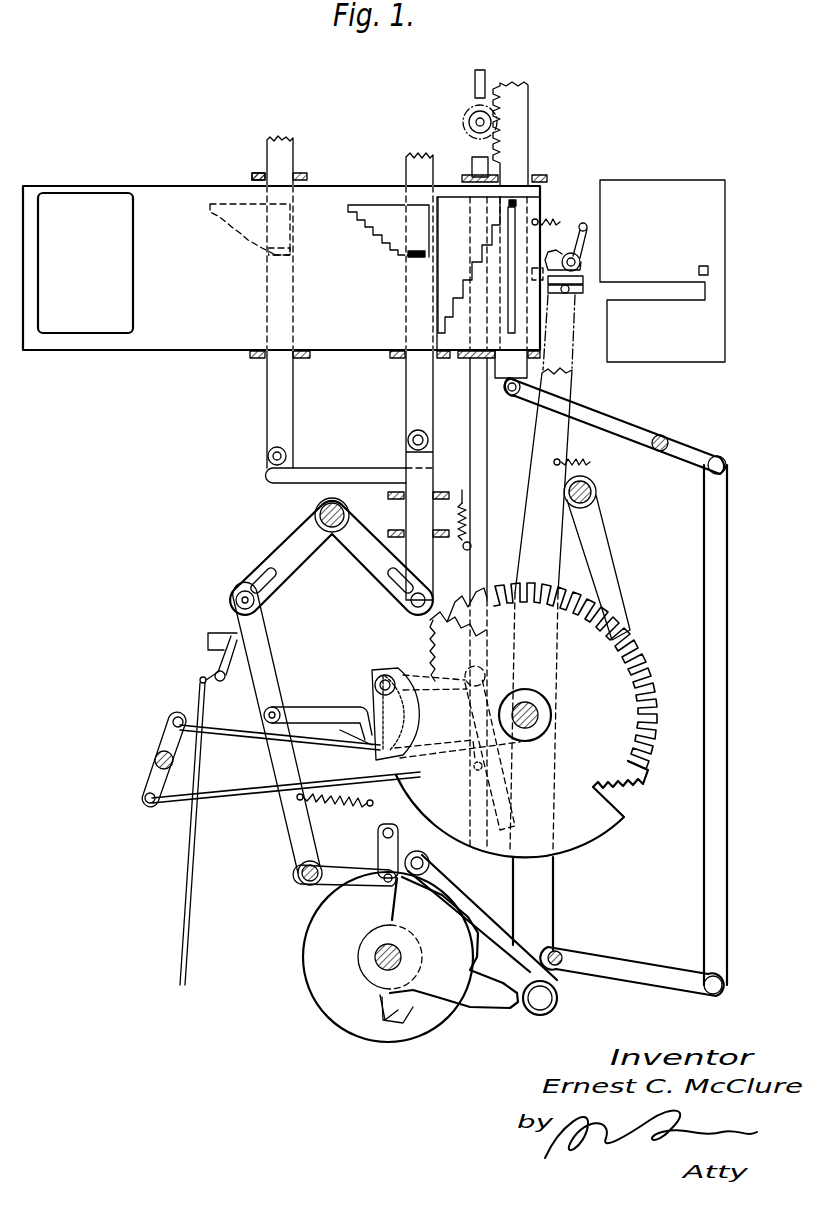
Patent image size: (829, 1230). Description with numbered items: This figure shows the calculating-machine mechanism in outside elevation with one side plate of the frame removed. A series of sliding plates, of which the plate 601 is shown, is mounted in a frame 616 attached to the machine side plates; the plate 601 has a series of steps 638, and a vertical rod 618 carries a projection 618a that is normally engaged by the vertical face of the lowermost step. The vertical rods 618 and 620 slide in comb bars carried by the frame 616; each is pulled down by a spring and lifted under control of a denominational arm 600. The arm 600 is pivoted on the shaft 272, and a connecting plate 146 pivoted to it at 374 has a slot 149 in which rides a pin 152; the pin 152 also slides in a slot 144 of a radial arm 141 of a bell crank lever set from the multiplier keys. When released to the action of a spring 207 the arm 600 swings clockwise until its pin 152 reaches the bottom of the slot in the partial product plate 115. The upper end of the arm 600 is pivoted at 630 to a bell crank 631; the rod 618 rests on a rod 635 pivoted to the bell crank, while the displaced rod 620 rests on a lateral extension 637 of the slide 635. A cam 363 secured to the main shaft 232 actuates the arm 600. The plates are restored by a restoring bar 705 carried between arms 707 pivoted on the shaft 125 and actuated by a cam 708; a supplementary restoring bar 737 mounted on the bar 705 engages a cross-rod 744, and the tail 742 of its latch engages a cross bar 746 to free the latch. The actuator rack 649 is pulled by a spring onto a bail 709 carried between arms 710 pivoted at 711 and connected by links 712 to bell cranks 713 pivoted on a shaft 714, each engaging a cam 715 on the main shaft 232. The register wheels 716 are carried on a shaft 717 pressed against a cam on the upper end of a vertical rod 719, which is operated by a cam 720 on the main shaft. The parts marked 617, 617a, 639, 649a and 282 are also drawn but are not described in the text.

The sliding plate 601 is at (143, 343).
The frame 616 is at (700, 213).
The guide 617 is at (255, 176).
The guide 617a is at (392, 358).
The vertical rod 618 is at (422, 175).
The projection 618a is at (412, 260).
The vertical rod 620 is at (283, 138).
The pivot 630 is at (240, 596).
The bell crank 631 is at (283, 552).
The rod 635 is at (417, 490).
The lateral extension 637 is at (273, 478).
The steps 638 is at (397, 223).
The stepped cam 639 is at (258, 218).
The denominational actuator rack 649 is at (515, 145).
The stop 649a is at (520, 201).
The restoring bar 705 is at (583, 296).
The arm 707 is at (550, 440).
The cam 708 is at (498, 1000).
The bail 709 is at (512, 396).
The arm 710 is at (641, 438).
The pivot 711 is at (660, 437).
The link 712 is at (708, 748).
The bell crank 713 is at (622, 973).
The shaft 714 is at (562, 952).
The cam 715 is at (425, 918).
The register wheel 716 is at (465, 118).
The shaft 717 is at (483, 120).
The vertical rod 719 is at (472, 520).
The cam 720 is at (395, 1035).
The supplementary restoring bar 737 is at (585, 270).
The tail 742 is at (588, 240).
The cross-rod 744 is at (708, 270).
The cross bar 746 is at (587, 226).
The partial product plate 115 is at (585, 815).
The shaft 125 is at (538, 715).
The radial arm 141 is at (415, 708).
The slot 144 is at (410, 648).
The connecting plate 146 is at (312, 714).
The slot 149 is at (286, 764).
The pin 152 is at (378, 677).
The spring 207 is at (340, 801).
The main shaft 232 is at (375, 962).
The shaft 272 is at (300, 878).
The hook 282 is at (210, 660).
The cam 363 is at (383, 1008).
The pivot 374 is at (265, 712).
The arm 600 is at (268, 672).